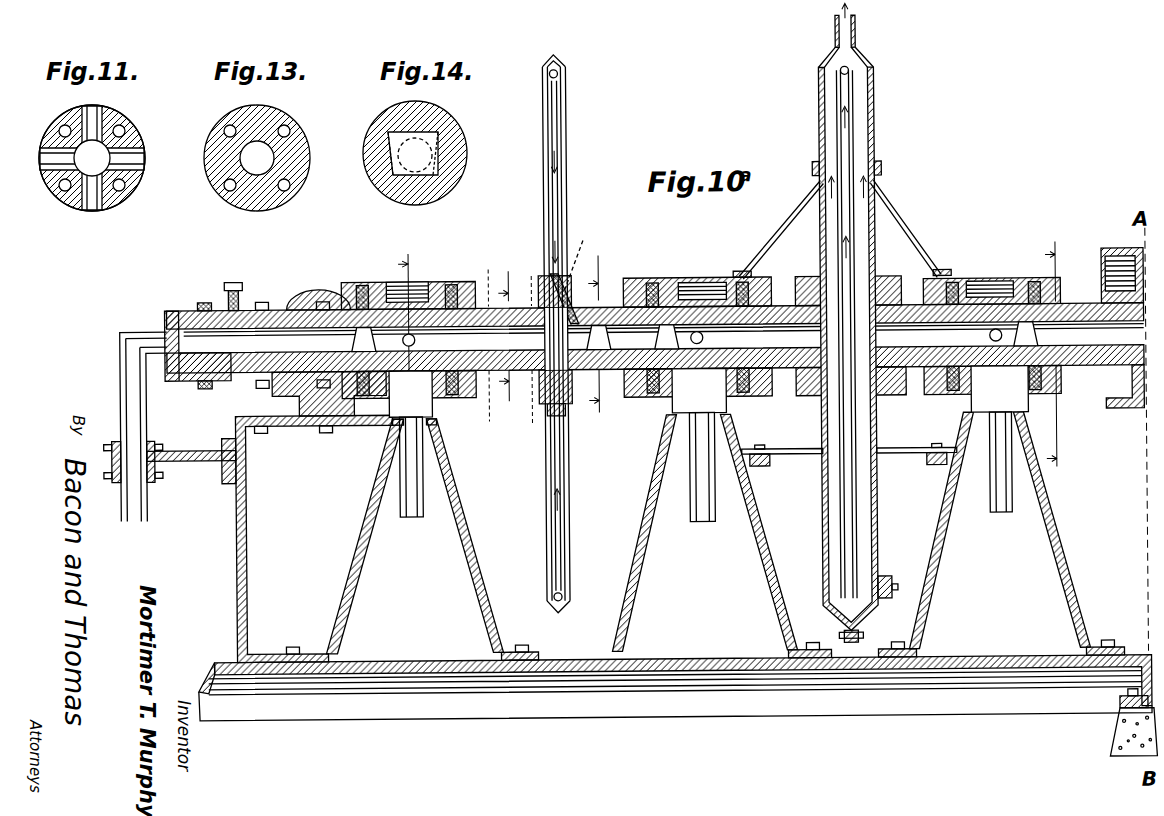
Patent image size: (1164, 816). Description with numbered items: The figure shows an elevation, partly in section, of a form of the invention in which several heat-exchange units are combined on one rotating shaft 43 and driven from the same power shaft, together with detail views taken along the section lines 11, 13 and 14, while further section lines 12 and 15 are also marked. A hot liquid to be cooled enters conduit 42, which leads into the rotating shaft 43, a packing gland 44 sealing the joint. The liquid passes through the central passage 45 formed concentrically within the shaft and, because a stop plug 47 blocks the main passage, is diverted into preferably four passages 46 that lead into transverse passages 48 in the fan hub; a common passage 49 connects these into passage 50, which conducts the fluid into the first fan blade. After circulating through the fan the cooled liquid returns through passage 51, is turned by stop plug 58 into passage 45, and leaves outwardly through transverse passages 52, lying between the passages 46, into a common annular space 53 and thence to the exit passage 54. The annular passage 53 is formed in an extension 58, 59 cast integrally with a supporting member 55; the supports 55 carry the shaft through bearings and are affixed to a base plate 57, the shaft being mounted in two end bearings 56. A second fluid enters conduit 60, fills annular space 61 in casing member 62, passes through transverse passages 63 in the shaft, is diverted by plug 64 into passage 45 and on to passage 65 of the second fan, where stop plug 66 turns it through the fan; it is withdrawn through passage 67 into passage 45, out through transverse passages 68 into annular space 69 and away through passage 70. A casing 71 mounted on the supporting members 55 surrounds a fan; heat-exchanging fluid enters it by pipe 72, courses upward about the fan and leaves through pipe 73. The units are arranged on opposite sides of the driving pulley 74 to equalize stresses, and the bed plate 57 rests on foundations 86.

In FIG. 10A, the section line 11 is at (418, 331).
In FIG. 10A, the section line 12 is at (540, 219).
In FIG. 10A, the section line 13 is at (507, 340).
In FIG. 10A, the section line 14 is at (606, 342).
In FIG. 10A, the section line 15 is at (1062, 355).
In FIG. 10A, the conduit 42 is at (148, 512).
In FIG. 11, the rotating shaft 43 is at (118, 190).
In FIG. 13, the rotating shaft 43 is at (300, 170).
In FIG. 14, the rotating shaft 43 is at (456, 176).
In FIG. 10A, the rotating shaft 43 is at (320, 318).
In FIG. 10A, the packing gland 44 is at (176, 310).
In FIG. 11, the passage 45 is at (62, 136).
In FIG. 13, the passage 45 is at (268, 152).
In FIG. 14, the passage 45 is at (396, 186).
In FIG. 10A, the passage 45 is at (236, 350).
In FIG. 11, the passages 46 is at (110, 122).
In FIG. 13, the passages 46 is at (232, 128).
In FIG. 10A, the passages 46 is at (485, 346).
In FIG. 10A, the stop plug 47 is at (368, 283).
In FIG. 10A, the transverse passages 48 is at (527, 358).
In FIG. 10A, the common passage 49 is at (545, 284).
In FIG. 10A, the passage 50 is at (583, 255).
In FIG. 10A, the passage 51 is at (576, 285).
In FIG. 11, the transverse passages 52 is at (132, 155).
In FIG. 10A, the transverse passages 52 is at (416, 333).
In FIG. 10A, the annular space 53 is at (392, 282).
In FIG. 10A, the exit passage 54 is at (412, 516).
In FIG. 10A, the supporting member 55 is at (352, 575).
In FIG. 10A, the end bearings 56 is at (294, 424).
In FIG. 10A, the base plate 57 is at (668, 662).
In FIG. 14, the stop plug 58 is at (428, 150).
In FIG. 10A, the stop plug 58 is at (386, 416).
In FIG. 10A, the extension 59 is at (455, 422).
In FIG. 10A, the conduit 60 is at (1000, 516).
In FIG. 10A, the annular space 61 is at (972, 401).
In FIG. 10A, the casing member 62 is at (1008, 283).
In FIG. 10A, the transverse passages 63 is at (978, 300).
In FIG. 10A, the plug 64 is at (1042, 340).
In FIG. 10A, the passage 65 is at (879, 272).
In FIG. 10A, the stop plug 66 is at (824, 411).
In FIG. 10A, the passage 67 is at (818, 264).
In FIG. 10A, the transverse passages 68 is at (704, 300).
In FIG. 10A, the annular space 69 is at (688, 281).
In FIG. 10A, the passage 70 is at (704, 522).
In FIG. 10A, the casing 71 is at (877, 121).
In FIG. 10A, the pipe 72 is at (884, 578).
In FIG. 10A, the pipe 73 is at (860, 33).
In FIG. 10A, the driving pulley 74 is at (1124, 413).
In FIG. 10A, the foundations 86 is at (1108, 743).